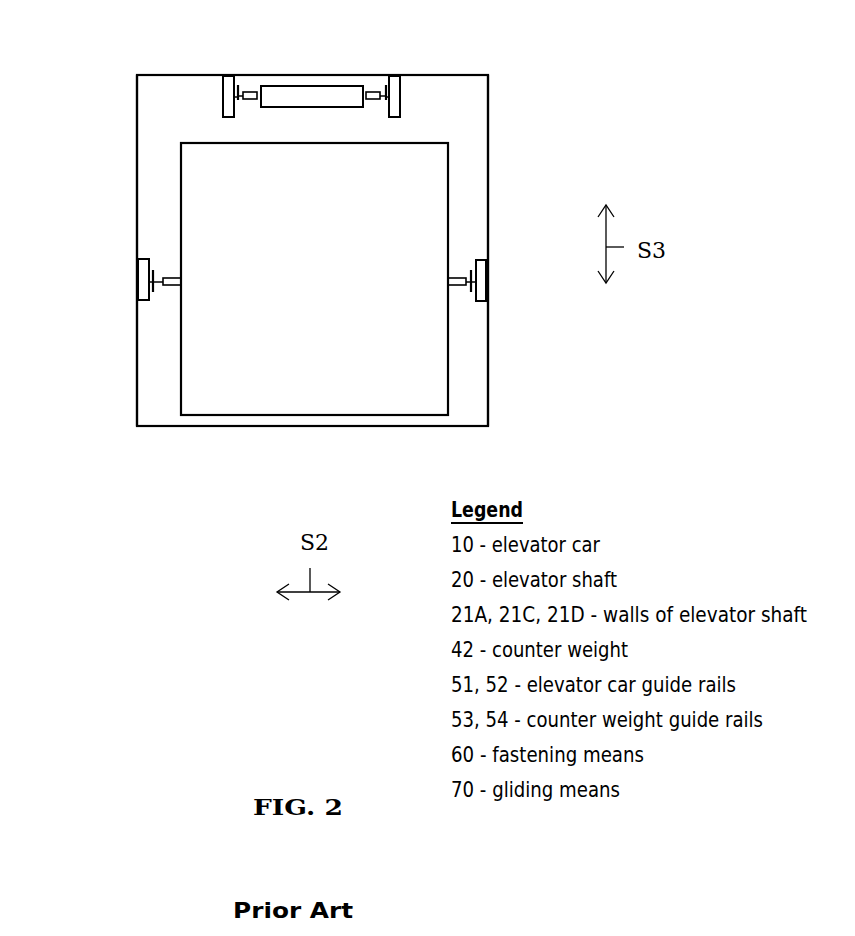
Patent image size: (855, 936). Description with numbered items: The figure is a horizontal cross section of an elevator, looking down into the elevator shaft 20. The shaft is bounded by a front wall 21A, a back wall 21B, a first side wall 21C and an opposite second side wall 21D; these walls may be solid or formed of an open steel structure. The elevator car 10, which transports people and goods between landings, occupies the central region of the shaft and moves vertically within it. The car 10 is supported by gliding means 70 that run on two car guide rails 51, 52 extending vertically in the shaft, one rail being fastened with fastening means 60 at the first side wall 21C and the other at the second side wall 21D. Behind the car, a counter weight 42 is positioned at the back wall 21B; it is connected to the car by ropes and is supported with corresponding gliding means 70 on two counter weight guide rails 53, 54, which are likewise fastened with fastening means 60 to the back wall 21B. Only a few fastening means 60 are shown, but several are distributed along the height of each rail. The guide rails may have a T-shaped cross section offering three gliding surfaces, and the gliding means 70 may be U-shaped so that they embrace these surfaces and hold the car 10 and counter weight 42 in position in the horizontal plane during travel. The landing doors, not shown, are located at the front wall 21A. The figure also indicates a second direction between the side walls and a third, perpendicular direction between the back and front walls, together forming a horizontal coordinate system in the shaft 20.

The elevator car 10 is at (328, 276).
The elevator shaft 20 is at (474, 197).
The front wall 21A is at (317, 427).
The back wall 21B is at (457, 75).
The first side wall 21C is at (137, 131).
The second side wall 21D is at (489, 121).
The counter weight 42 is at (317, 100).
The car guide rail 51 is at (153, 292).
The car guide rail 52 is at (471, 292).
The counter weight guide rail 53 is at (241, 88).
The counter weight guide rail 54 is at (384, 88).
The fastening means 60 is at (226, 97).
The gliding means 70 is at (250, 91).